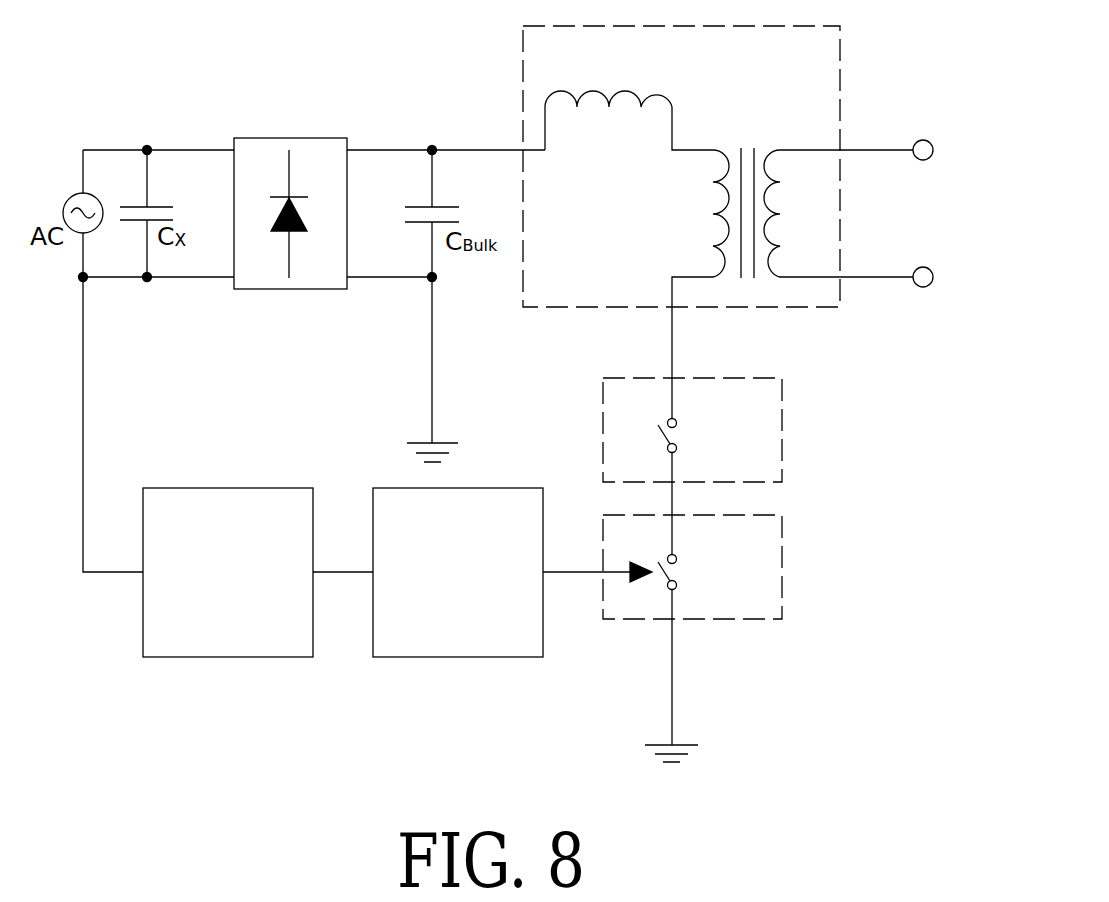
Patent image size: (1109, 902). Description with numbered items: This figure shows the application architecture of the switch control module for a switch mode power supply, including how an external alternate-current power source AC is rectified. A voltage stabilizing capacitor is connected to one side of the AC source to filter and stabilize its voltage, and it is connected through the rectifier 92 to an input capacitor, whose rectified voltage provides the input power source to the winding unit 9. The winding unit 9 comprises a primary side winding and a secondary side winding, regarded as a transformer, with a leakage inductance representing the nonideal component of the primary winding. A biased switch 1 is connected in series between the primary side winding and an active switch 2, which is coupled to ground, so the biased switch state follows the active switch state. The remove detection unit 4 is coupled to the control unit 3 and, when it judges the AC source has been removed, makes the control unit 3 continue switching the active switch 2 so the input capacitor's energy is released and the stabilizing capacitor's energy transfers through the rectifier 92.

The rectifier 92 is at (348, 139).
The winding unit 9 is at (840, 60).
The first switch SWA 1 is at (782, 407).
The second switch SWB 2 is at (782, 548).
The control unit 3 is at (392, 657).
The remove detection unit 4 is at (162, 657).